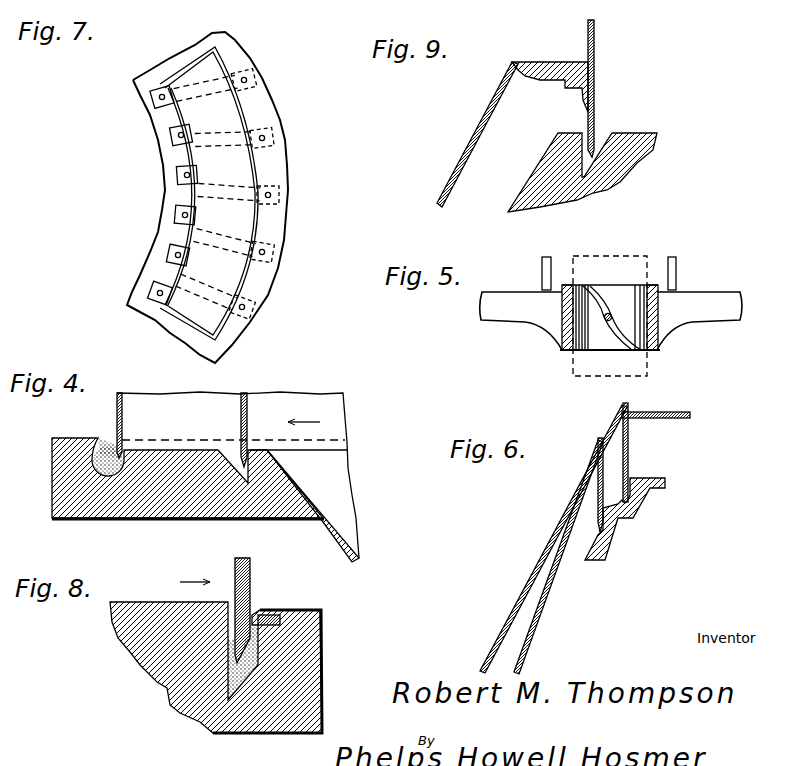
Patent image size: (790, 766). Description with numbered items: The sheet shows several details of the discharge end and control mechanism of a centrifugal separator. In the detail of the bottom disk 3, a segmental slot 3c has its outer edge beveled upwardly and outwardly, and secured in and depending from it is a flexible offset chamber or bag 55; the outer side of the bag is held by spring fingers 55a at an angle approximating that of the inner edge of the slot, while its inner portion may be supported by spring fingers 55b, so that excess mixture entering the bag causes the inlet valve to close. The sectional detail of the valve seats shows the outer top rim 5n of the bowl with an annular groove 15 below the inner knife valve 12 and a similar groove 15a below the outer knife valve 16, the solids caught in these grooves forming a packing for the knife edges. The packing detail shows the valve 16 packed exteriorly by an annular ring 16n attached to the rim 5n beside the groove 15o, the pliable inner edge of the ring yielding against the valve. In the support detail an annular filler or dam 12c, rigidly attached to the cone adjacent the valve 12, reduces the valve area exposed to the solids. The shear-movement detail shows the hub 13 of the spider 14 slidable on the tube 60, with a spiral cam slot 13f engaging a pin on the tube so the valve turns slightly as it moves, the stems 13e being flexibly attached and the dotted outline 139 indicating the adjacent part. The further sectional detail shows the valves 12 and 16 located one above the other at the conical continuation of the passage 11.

In FIG. 7, the bottom disk 3 is at (265, 110).
In FIG. 7, the segmental slot 3c is at (227, 58).
In FIG. 7, the bag 55 is at (245, 173).
In FIG. 7, the spring fingers 55a is at (232, 143).
In FIG. 7, the spring fingers 55b is at (171, 135).
In FIG. 9, the inner knife valve 12 is at (595, 115).
In FIG. 4, the inner knife valve 12 is at (249, 402).
In FIG. 6, the inner knife valve 12 is at (598, 505).
In FIG. 9, the annular filler or dam 12c is at (546, 70).
In FIG. 5, the hub 13 is at (660, 338).
In FIG. 5, the rods 13e is at (692, 252).
In FIG. 5, the spiral cam slot 13f is at (597, 293).
In FIG. 5, the dashed outline 139 is at (583, 350).
In FIG. 5, the spider 14 is at (611, 321).
In FIG. 5, the tube 60 is at (579, 262).
In FIG. 4, the outer top rim 5n is at (191, 506).
In FIG. 8, the outer top rim 5n is at (312, 633).
In FIG. 6, the outer top rim 5n is at (625, 519).
In FIG. 4, the annular groove 15 is at (250, 467).
In FIG. 4, the annular groove 15a is at (92, 465).
In FIG. 8, the filled recess 15o is at (259, 667).
In FIG. 4, the outer knife valve 16 is at (152, 399).
In FIG. 8, the outer knife valve 16 is at (250, 580).
In FIG. 6, the outer knife valve 16 is at (630, 450).
In FIG. 8, the annular packing ring 16n is at (268, 611).
In FIG. 6, the passage 11 is at (585, 539).